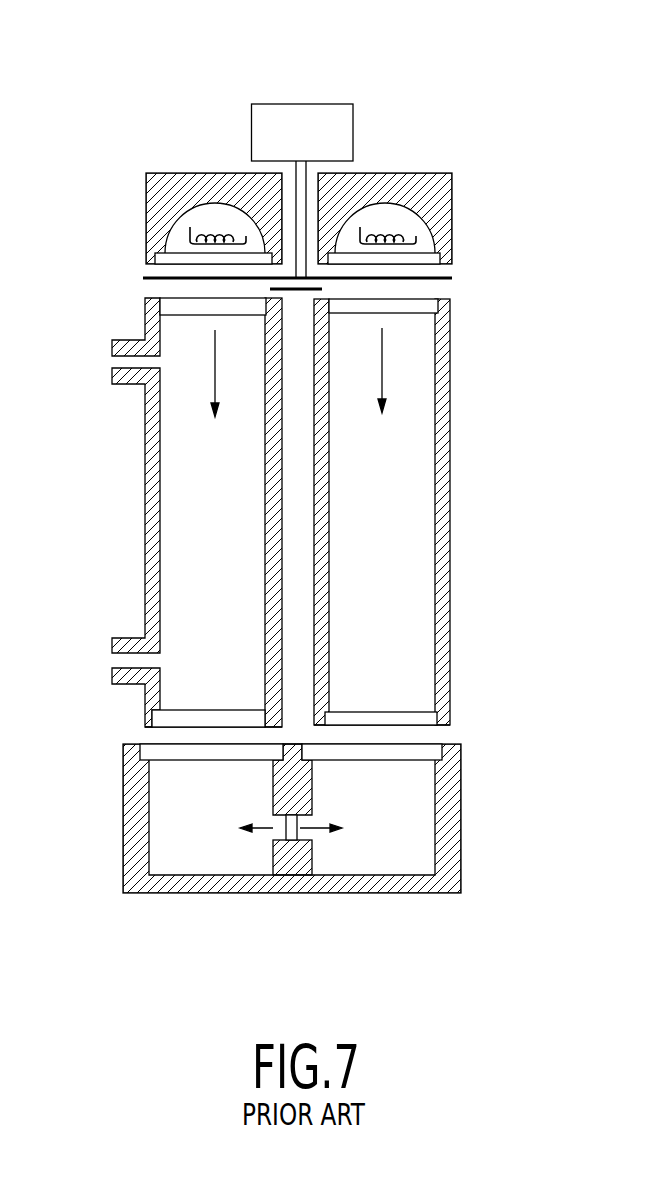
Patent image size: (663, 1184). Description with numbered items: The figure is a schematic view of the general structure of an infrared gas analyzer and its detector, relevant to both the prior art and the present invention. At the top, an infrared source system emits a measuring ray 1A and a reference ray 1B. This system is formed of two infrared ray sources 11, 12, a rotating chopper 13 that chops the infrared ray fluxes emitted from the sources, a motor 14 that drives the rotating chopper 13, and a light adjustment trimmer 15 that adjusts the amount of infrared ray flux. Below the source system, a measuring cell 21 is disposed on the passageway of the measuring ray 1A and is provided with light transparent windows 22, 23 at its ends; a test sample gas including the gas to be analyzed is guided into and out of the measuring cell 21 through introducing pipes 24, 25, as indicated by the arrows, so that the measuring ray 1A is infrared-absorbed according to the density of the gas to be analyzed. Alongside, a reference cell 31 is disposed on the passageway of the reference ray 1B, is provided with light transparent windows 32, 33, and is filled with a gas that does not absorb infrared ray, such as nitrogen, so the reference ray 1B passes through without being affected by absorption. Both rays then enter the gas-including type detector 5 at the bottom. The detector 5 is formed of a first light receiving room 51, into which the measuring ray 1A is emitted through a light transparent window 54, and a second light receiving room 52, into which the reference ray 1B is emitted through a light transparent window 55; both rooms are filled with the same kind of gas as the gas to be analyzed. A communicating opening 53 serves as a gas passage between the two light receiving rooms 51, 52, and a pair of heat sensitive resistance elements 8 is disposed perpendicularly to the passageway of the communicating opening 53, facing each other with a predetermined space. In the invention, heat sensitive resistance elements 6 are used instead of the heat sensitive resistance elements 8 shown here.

The motor 14 is at (293, 118).
The infrared ray source 11 is at (202, 218).
The infrared ray source 12 is at (375, 215).
The rotating chopper 13 is at (148, 278).
The light adjustment trimmer 15 is at (310, 287).
The measuring cell 21 is at (160, 498).
The light transparent window 22 is at (152, 311).
The light transparent window 23 is at (190, 715).
The introducing pipe 24 is at (90, 662).
The introducing pipe 25 is at (108, 362).
The reference cell 31 is at (432, 512).
The light transparent window 32 is at (406, 312).
The light transparent window 33 is at (400, 717).
The detector 5 is at (292, 856).
The first light receiving room 51 is at (182, 845).
The second light receiving room 52 is at (397, 818).
The communicating opening 53 is at (304, 856).
The light transparent window 54 is at (200, 753).
The light transparent window 55 is at (395, 753).
The heat sensitive resistance element 8 is at (336, 892).
The heat sensitive resistance element 6 is at (297, 837).
The measuring ray 1A is at (212, 395).
The reference ray 1B is at (382, 393).